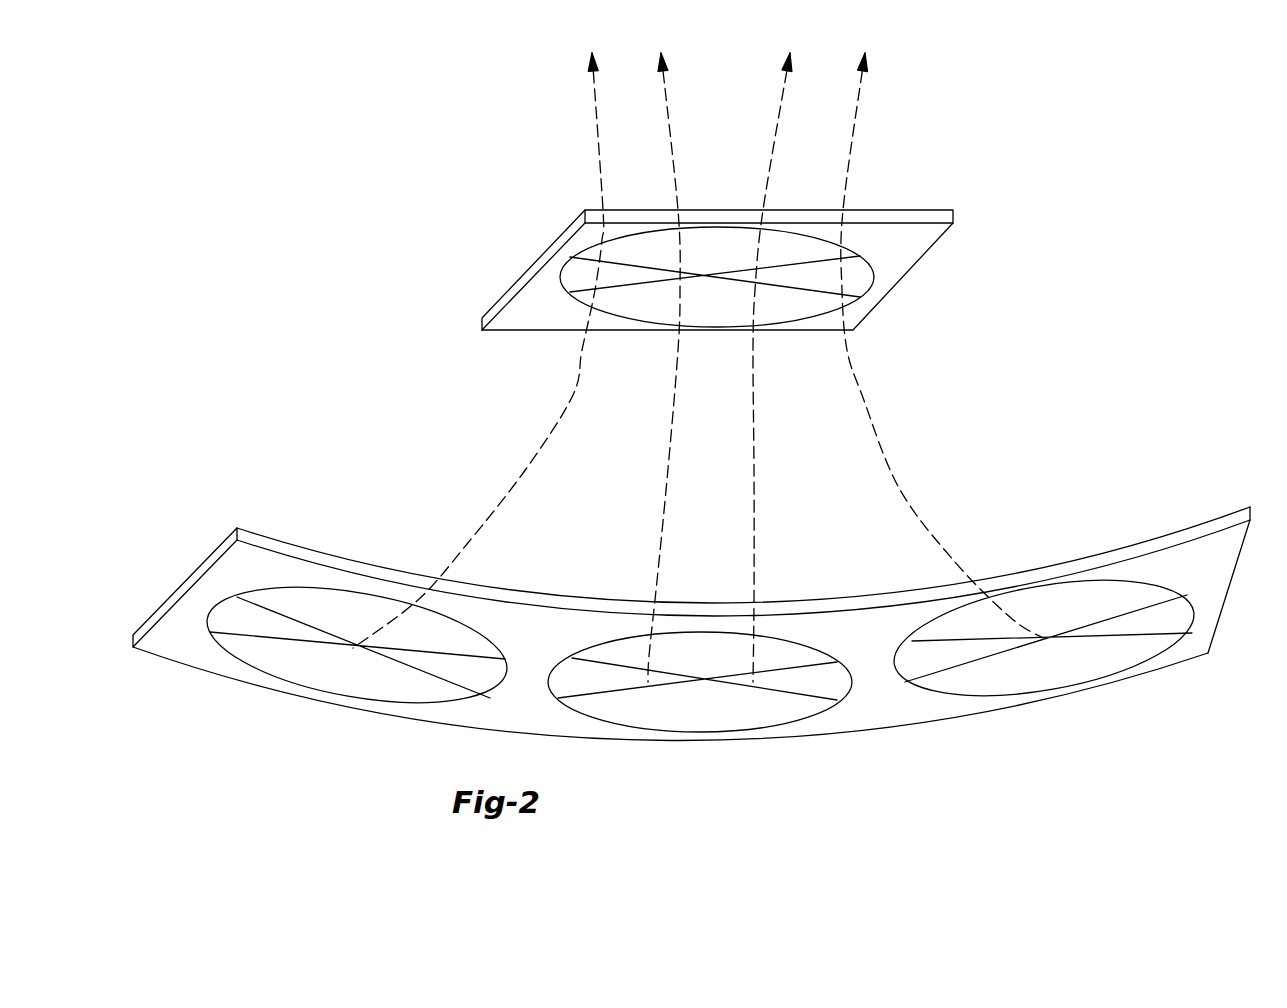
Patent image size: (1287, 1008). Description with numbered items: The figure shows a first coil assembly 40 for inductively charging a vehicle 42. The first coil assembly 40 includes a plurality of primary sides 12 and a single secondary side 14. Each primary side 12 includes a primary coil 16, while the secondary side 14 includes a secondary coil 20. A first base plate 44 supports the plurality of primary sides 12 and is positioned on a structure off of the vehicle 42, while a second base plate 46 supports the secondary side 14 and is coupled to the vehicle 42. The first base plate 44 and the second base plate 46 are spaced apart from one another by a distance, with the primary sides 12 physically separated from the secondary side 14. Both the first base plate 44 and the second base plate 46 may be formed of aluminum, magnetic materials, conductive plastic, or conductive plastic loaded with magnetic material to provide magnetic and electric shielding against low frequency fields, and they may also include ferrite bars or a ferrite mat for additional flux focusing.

The primary side 12 is at (353, 649).
The secondary side 14 is at (858, 275).
The primary coil 16 is at (452, 647).
The secondary coil 20 is at (573, 278).
The first coil assembly 40 is at (1060, 304).
The vehicle 42 is at (1036, 149).
The first base plate 44 is at (888, 728).
The second base plate 46 is at (482, 328).